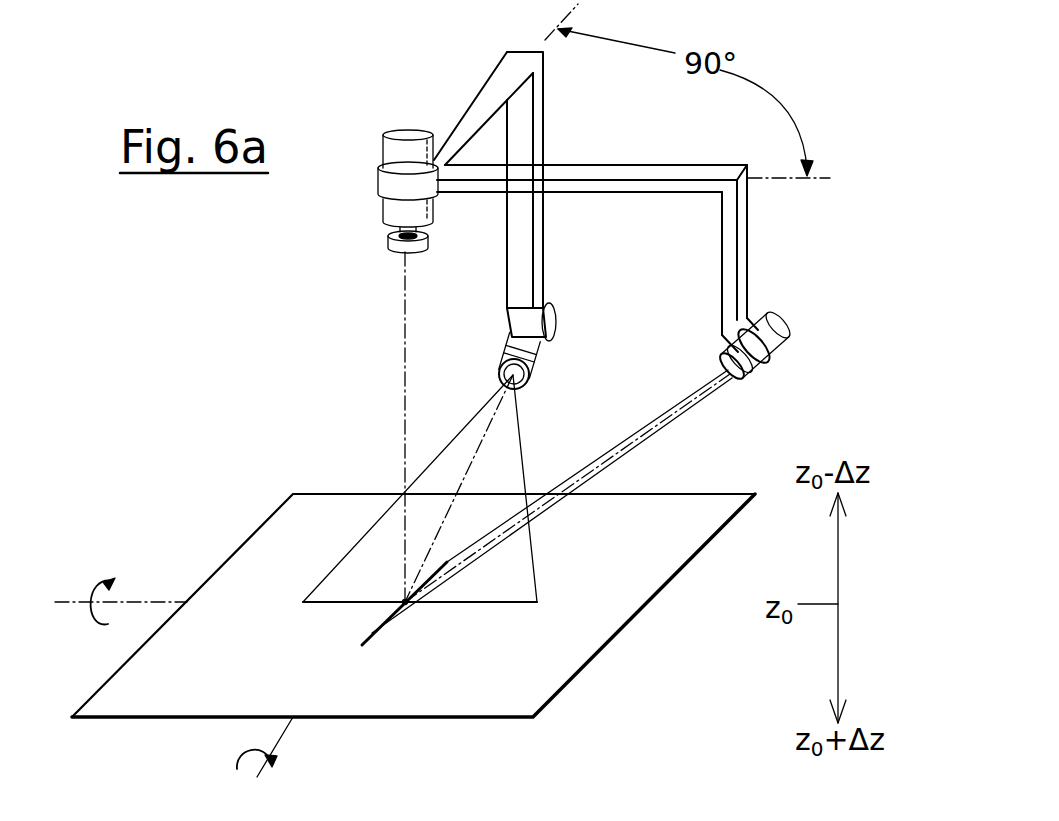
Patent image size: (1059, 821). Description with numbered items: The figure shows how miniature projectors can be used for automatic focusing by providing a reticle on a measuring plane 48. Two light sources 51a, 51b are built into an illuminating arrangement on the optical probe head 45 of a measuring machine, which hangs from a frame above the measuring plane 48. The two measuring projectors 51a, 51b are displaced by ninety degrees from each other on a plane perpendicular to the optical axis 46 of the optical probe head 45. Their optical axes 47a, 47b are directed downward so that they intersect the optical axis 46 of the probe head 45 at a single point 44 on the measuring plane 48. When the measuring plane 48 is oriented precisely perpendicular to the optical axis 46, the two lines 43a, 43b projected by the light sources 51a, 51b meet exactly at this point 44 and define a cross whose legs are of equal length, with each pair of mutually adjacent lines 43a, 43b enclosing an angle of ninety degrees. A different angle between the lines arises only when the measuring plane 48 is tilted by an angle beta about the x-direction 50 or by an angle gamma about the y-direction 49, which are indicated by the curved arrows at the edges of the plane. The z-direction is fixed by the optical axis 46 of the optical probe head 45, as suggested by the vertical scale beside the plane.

The line of light source 43a is at (378, 622).
The line of light source 43b is at (493, 604).
The point 44 is at (405, 602).
The optical probe head 45 is at (412, 137).
The optical axis 46 is at (404, 380).
The optical axis of light source 47a is at (503, 533).
The optical axis of light source 47b is at (480, 447).
The measuring plane 48 is at (583, 658).
The y-direction 49 is at (240, 767).
The x-direction 50 is at (66, 602).
The light source 51a is at (789, 321).
The light source 51b is at (548, 310).